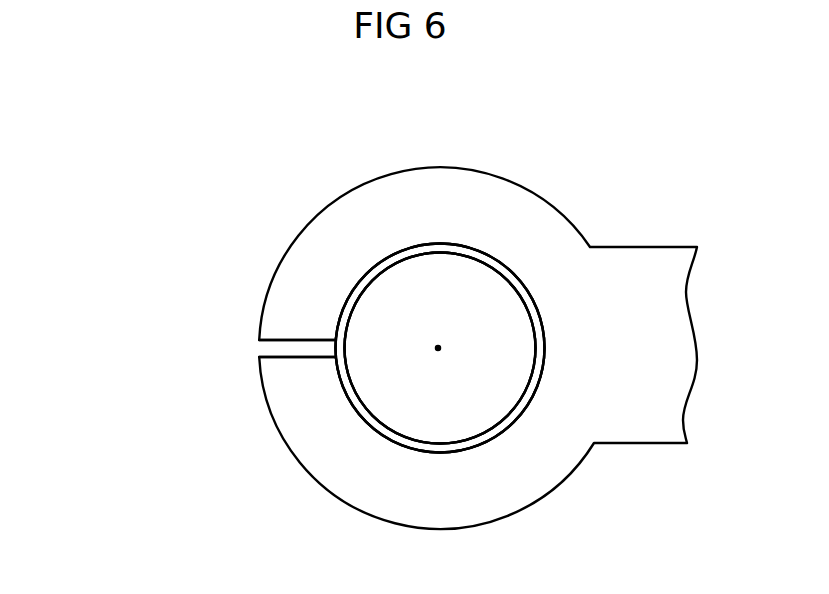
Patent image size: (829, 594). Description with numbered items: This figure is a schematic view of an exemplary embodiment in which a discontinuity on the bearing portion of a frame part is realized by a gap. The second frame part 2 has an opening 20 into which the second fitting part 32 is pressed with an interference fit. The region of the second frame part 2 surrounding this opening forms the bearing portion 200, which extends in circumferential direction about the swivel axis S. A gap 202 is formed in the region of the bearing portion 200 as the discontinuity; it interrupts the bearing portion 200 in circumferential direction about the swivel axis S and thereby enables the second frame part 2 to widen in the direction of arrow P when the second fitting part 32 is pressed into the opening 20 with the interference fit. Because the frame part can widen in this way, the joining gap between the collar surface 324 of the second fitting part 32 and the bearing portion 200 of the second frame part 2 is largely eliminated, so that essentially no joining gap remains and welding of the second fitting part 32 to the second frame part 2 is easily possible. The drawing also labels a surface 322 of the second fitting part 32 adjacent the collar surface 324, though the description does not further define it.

The second frame part 2 is at (525, 477).
The opening 20 is at (342, 278).
The bearing portion 200 is at (390, 267).
The gap 202 is at (298, 348).
The second fitting part 32 is at (409, 419).
The inner surface 322 is at (482, 290).
The collar surface 324 is at (466, 247).
The swivel axis S is at (441, 347).
The arrow P is at (240, 306).